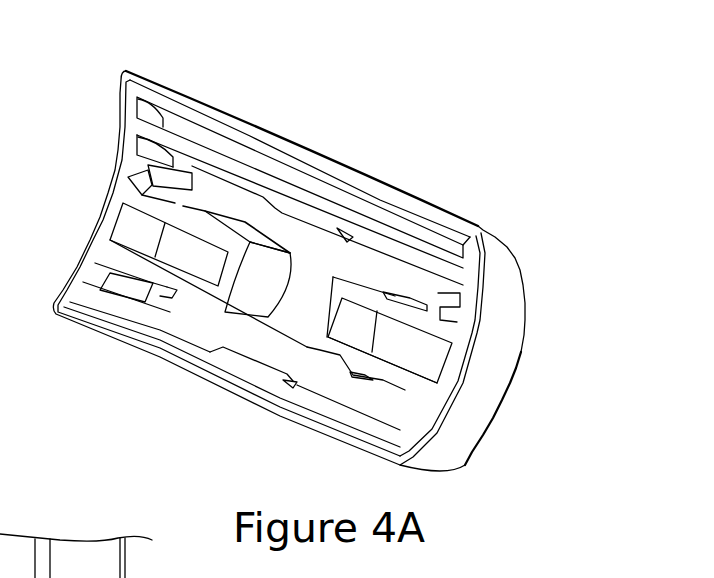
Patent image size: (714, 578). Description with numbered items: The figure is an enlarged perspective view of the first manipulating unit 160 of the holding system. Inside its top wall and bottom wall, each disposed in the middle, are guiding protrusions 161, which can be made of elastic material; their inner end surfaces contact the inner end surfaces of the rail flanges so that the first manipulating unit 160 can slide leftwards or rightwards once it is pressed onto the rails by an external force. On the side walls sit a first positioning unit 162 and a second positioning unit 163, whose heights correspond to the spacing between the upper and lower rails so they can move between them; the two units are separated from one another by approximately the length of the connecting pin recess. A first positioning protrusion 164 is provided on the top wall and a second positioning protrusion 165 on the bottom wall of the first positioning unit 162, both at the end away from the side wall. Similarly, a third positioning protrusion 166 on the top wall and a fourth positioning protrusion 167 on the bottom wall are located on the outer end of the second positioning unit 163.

The first manipulating unit 160 is at (113, 66).
The guiding protrusion 161 is at (247, 375).
The first positioning unit 162 is at (393, 360).
The second positioning unit 163 is at (156, 257).
The first positioning protrusion 164 is at (365, 297).
The second positioning protrusion 165 is at (342, 356).
The third positioning protrusion 166 is at (210, 228).
The fourth positioning protrusion 167 is at (180, 288).